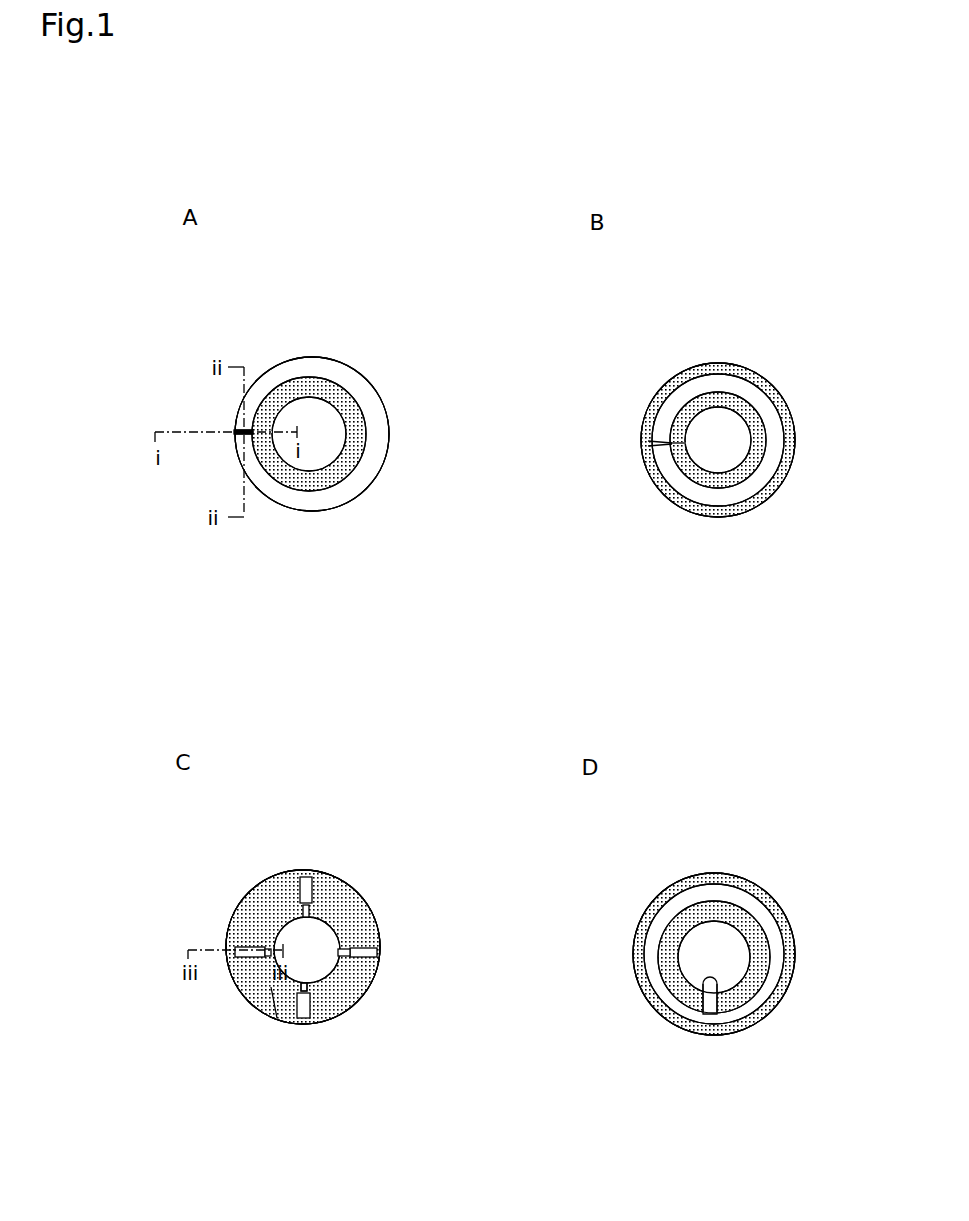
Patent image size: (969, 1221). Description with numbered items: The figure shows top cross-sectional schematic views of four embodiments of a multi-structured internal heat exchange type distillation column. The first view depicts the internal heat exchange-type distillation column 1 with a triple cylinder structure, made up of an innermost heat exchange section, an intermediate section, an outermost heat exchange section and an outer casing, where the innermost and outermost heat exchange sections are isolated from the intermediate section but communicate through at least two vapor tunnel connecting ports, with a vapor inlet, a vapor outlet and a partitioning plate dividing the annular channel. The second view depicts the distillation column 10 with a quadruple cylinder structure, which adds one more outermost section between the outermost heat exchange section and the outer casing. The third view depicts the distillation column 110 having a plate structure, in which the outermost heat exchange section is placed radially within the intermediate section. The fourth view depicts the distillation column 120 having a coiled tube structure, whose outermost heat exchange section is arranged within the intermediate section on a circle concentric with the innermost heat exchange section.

The internal heat exchange-type distillation column 1 is at (223, 317).
The internal heat exchange-type distillation column 10 is at (660, 355).
The internal heat exchange type distillation column 110 is at (247, 863).
The distillation column 120 is at (620, 908).